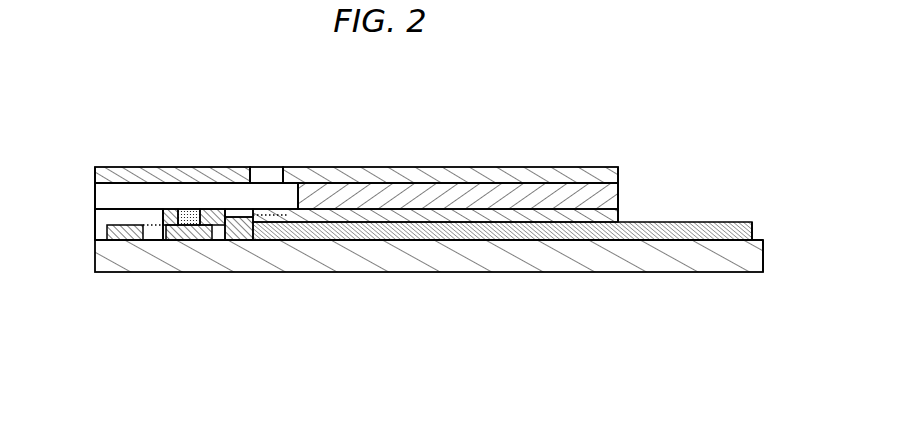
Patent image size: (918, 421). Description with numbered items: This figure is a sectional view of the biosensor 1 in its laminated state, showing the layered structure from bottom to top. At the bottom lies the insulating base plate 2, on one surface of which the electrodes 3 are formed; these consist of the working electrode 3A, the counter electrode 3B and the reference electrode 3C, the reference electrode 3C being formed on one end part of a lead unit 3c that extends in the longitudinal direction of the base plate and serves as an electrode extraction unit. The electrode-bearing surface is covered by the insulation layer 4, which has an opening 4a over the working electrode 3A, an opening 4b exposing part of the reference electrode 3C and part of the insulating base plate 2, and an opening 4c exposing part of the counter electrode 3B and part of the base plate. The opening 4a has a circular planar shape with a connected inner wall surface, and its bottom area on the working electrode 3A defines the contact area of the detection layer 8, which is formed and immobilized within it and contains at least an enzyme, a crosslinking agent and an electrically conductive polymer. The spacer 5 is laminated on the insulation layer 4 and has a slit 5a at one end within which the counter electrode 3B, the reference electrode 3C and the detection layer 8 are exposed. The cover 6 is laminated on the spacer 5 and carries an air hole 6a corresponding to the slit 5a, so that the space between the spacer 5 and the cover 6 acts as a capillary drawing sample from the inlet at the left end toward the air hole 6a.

The biosensor 1 is at (620, 123).
The insulating base plate 2 is at (766, 250).
The electrodes 3 is at (209, 282).
The working electrode 3A is at (196, 248).
The counter electrode 3B is at (119, 248).
The reference electrode 3C is at (252, 246).
The lead unit 3c is at (742, 222).
The insulation layer 4 is at (620, 212).
The opening 4a is at (146, 190).
The opening 4b is at (243, 211).
The opening 4c is at (92, 232).
The spacer 5 is at (620, 188).
The slit 5a is at (108, 203).
The cover 6 is at (445, 168).
The air hole 6a is at (268, 168).
The detection layer 8 is at (188, 212).